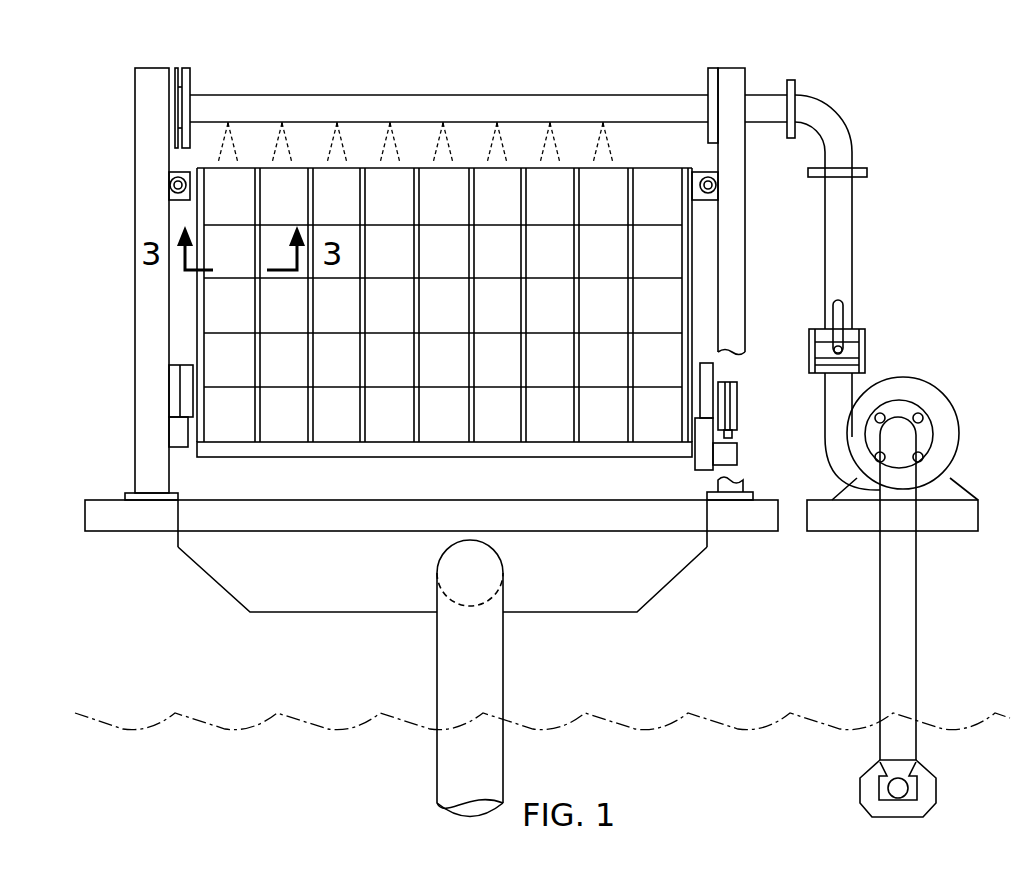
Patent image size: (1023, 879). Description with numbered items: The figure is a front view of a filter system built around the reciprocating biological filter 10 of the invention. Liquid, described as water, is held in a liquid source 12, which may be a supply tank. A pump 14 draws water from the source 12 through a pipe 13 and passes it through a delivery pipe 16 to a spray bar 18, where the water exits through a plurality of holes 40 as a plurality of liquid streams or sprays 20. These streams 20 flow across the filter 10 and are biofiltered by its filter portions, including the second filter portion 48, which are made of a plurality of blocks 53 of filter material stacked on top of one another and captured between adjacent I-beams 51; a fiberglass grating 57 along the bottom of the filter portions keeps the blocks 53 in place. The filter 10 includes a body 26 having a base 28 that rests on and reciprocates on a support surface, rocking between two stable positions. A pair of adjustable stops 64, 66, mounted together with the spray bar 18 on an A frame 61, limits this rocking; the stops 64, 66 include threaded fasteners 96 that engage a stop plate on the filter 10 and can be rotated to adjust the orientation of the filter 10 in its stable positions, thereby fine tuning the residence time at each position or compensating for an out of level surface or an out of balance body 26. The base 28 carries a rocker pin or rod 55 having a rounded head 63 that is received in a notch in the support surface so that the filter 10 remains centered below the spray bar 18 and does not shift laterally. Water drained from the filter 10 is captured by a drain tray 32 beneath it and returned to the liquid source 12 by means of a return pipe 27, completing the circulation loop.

The filter 10 is at (516, 130).
The liquid source 12 is at (140, 736).
The pipe 13 is at (910, 597).
The pump 14 is at (930, 393).
The delivery pipe 16 is at (845, 238).
The spray bar 18 is at (352, 95).
The liquid streams 20 is at (218, 140).
The body 26 is at (736, 398).
The return pipe 27 is at (497, 657).
The base 28 is at (735, 428).
The drain tray 32 is at (214, 570).
The holes 40 is at (396, 130).
The second filter portion 48 is at (657, 178).
The I-beams 51 is at (262, 178).
The blocks 53 is at (226, 309).
The rocker pin 55 is at (708, 376).
The fiberglass grating 57 is at (277, 455).
The A frame 61 is at (135, 199).
The rounded head 63 is at (736, 454).
The stop 64 is at (694, 150).
The stop 66 is at (176, 156).
The threaded fasteners 96 is at (170, 183).